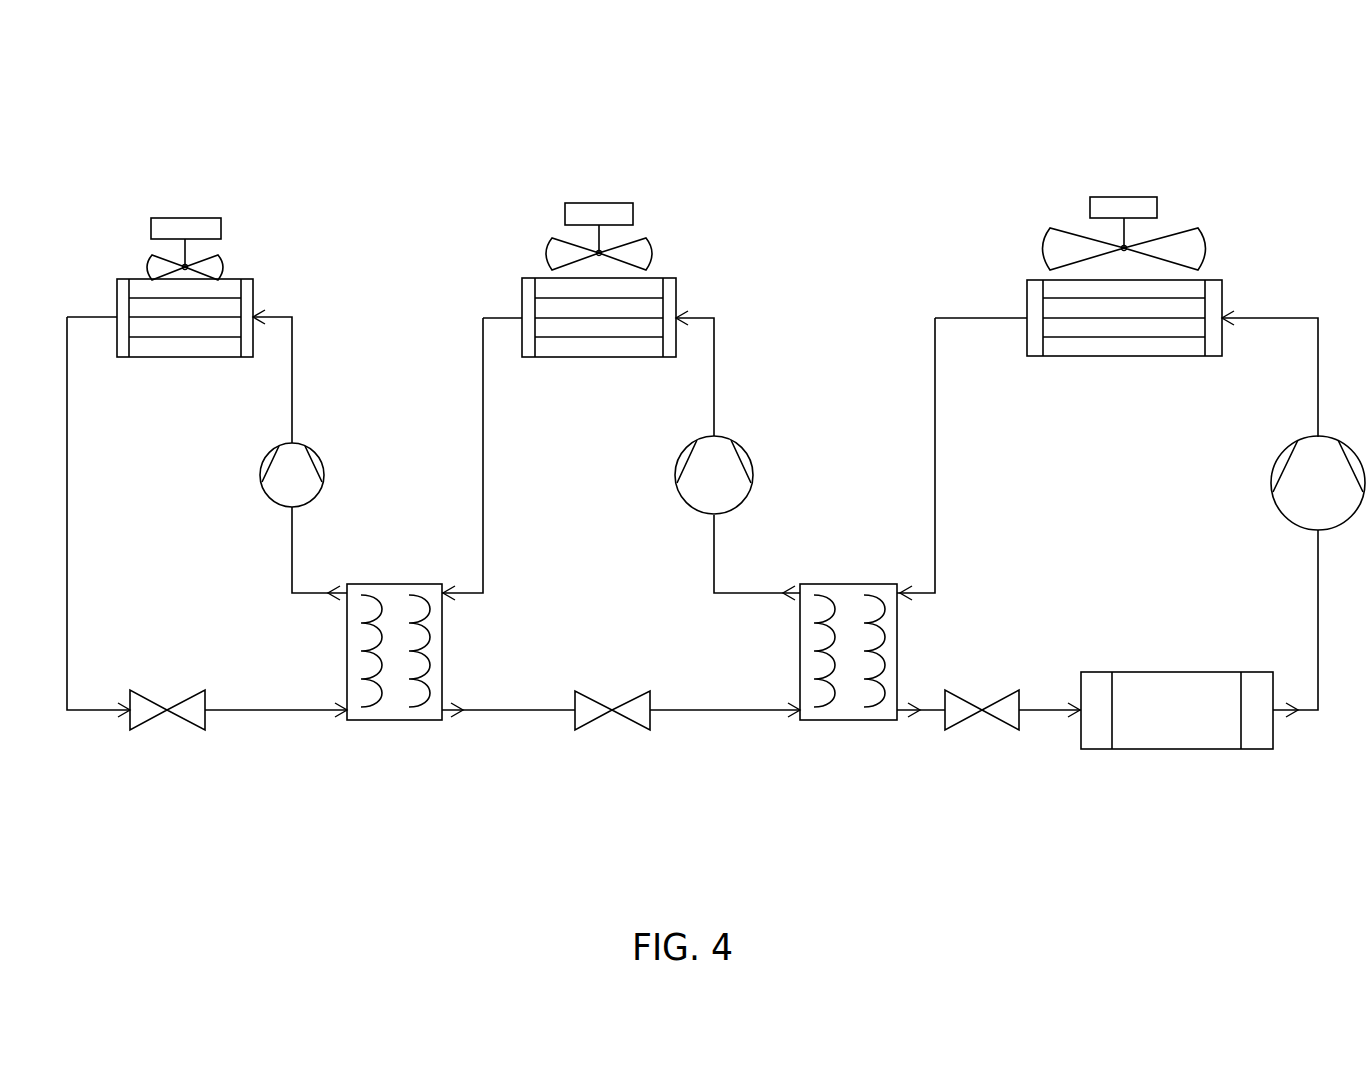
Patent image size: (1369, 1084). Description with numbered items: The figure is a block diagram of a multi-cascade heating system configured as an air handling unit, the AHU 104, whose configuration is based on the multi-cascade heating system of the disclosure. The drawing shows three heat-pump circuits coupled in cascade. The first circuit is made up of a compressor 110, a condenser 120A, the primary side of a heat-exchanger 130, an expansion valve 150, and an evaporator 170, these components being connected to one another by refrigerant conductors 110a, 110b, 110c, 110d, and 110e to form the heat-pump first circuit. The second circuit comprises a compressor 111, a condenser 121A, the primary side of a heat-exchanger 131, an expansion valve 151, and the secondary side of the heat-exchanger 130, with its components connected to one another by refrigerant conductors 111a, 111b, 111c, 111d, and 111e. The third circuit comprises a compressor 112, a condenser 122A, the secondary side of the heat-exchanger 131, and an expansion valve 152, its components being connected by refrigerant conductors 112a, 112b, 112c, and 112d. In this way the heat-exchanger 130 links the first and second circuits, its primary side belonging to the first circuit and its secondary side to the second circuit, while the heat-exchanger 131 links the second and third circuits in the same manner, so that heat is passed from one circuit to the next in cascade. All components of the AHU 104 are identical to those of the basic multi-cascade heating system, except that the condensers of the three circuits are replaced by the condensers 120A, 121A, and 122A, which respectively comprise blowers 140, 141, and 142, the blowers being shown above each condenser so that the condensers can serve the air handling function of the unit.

The AHU 104 is at (1259, 117).
The compressor 110 is at (1291, 438).
The refrigerant conductor 110a is at (1318, 362).
The refrigerant conductor 110b is at (935, 516).
The refrigerant conductor 110c is at (924, 708).
The refrigerant conductor 110d is at (1053, 708).
The refrigerant conductor 110e is at (1318, 607).
The compressor 111 is at (725, 438).
The refrigerant conductor 111a is at (714, 395).
The refrigerant conductor 111b is at (483, 494).
The refrigerant conductor 111c is at (500, 708).
The refrigerant conductor 111d is at (698, 708).
The refrigerant conductor 111e is at (714, 540).
The compressor 112 is at (317, 452).
The refrigerant conductor 112a is at (292, 383).
The refrigerant conductor 112b is at (67, 528).
The refrigerant conductor 112c is at (272, 708).
The refrigerant conductor 112d is at (292, 560).
The condenser 120A is at (1065, 357).
The condenser 121A is at (542, 357).
The condenser 122A is at (135, 358).
The heat-exchanger 130 is at (851, 584).
The heat-exchanger 131 is at (402, 584).
The blower 140 is at (1112, 205).
The blower 141 is at (588, 213).
The blower 142 is at (187, 223).
The expansion valve 150 is at (993, 695).
The expansion valve 151 is at (590, 693).
The expansion valve 152 is at (143, 690).
The evaporator 170 is at (1157, 672).